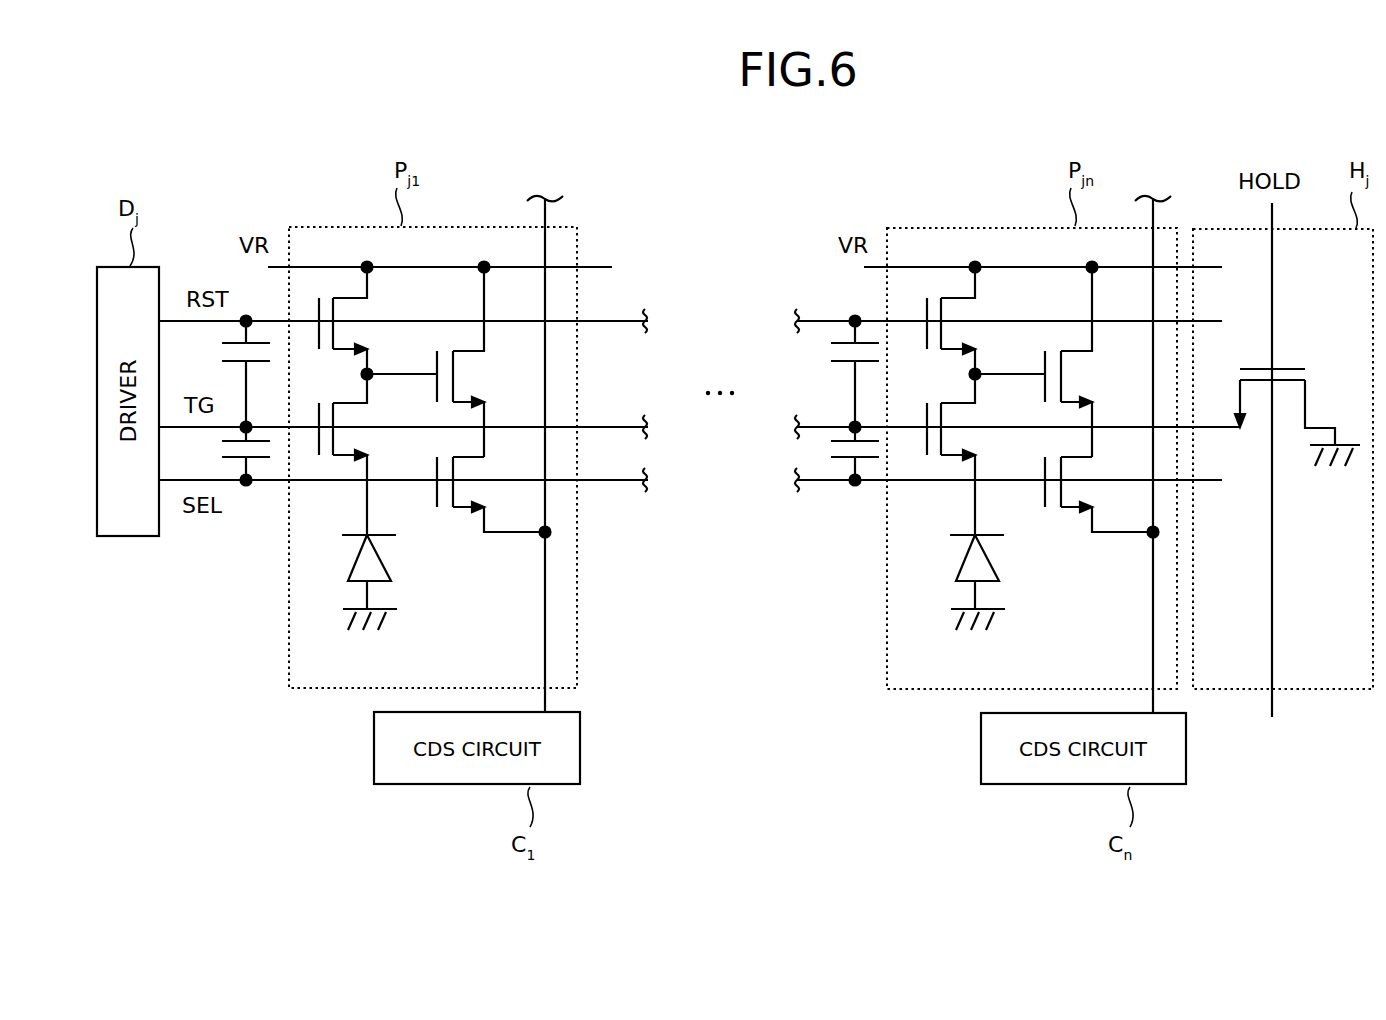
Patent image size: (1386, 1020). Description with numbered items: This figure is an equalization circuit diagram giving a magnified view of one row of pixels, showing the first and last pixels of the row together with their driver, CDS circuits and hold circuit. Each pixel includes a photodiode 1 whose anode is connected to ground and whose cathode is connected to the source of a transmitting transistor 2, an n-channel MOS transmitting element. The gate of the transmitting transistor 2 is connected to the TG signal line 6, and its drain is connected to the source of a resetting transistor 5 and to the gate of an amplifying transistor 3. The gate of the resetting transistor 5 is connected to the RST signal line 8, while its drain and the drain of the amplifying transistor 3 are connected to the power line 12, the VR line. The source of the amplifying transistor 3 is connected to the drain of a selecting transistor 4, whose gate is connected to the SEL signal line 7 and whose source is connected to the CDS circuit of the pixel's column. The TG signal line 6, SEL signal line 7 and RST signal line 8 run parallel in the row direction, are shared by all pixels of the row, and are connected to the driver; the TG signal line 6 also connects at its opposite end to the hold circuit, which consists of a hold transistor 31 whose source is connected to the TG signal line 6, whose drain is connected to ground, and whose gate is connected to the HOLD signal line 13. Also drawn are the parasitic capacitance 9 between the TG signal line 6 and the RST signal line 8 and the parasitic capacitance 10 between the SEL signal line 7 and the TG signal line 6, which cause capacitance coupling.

The photodiode 1 is at (385, 562).
The transmitting transistor 2 is at (370, 446).
The amplifying transistor 3 is at (474, 380).
The selecting transistor 4 is at (476, 520).
The resetting transistor 5 is at (370, 310).
The TG signal line 6 is at (628, 425).
The SEL signal line 7 is at (632, 487).
The RST signal line 8 is at (628, 319).
The parasitic capacitance 9 is at (220, 352).
The parasitic capacitance 10 is at (223, 451).
The power line 12 is at (597, 265).
The HOLD signal line 13 is at (1275, 597).
The hold transistor 31 is at (1309, 400).